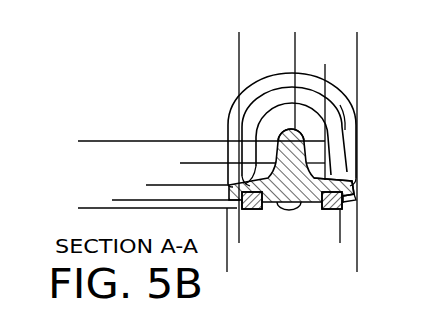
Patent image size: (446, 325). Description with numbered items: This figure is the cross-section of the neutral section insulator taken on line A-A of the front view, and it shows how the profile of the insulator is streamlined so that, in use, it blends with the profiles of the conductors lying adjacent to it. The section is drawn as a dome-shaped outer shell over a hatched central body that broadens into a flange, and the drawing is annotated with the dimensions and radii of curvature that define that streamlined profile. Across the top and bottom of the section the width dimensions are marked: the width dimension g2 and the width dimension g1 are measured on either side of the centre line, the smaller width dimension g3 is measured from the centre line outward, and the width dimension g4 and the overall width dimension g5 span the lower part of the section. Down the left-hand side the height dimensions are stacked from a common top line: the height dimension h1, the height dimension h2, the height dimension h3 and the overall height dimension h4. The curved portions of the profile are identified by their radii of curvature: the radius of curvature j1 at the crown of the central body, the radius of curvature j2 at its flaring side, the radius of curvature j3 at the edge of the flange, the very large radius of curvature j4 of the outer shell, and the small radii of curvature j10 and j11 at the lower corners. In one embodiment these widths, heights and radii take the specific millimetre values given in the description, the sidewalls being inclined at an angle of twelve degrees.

The radius of curvature j1 is at (304, 132).
The radius of curvature j2 is at (316, 168).
The radius of curvature j3 is at (357, 182).
The radius of curvature j4 is at (197, 189).
The radius of curvature j10 is at (337, 212).
The radius of curvature j11 is at (356, 204).
The width dimension g1 is at (357, 40).
The width dimension g2 is at (295, 40).
The width dimension g3 is at (325, 71).
The width dimension g4 is at (340, 240).
The width dimension g5 is at (357, 267).
The height dimension h1 is at (187, 141).
The height dimension h2 is at (153, 141).
The height dimension h3 is at (121, 141).
The height dimension h4 is at (87, 141).